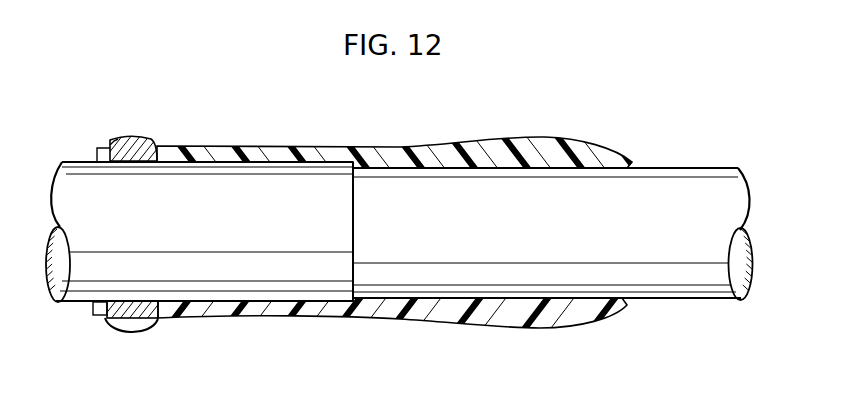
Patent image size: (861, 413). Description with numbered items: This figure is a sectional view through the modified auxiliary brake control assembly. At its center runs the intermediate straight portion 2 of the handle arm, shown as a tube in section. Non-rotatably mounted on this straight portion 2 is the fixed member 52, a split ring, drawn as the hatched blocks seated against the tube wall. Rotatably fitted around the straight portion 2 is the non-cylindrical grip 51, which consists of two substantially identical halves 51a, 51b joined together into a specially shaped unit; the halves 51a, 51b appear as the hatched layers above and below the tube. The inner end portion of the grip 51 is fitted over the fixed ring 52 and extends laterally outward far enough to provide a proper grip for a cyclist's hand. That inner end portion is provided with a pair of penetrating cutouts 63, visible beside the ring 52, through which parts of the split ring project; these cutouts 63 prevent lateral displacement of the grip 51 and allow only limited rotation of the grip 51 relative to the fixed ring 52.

The handle arm straight portion 2 is at (423, 167).
The grip 51 is at (408, 235).
The grip half 51a is at (503, 137).
The grip half 51b is at (468, 326).
The fixed member 52 is at (140, 137).
The penetrating cutouts 63 is at (112, 140).